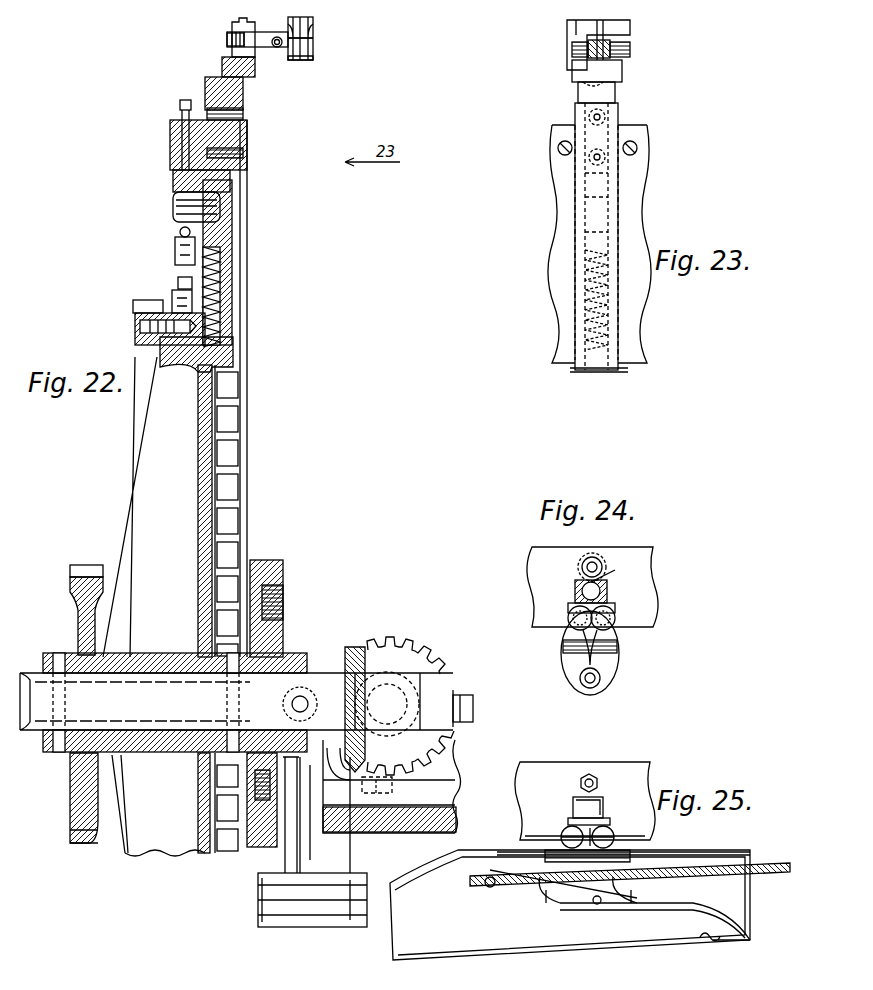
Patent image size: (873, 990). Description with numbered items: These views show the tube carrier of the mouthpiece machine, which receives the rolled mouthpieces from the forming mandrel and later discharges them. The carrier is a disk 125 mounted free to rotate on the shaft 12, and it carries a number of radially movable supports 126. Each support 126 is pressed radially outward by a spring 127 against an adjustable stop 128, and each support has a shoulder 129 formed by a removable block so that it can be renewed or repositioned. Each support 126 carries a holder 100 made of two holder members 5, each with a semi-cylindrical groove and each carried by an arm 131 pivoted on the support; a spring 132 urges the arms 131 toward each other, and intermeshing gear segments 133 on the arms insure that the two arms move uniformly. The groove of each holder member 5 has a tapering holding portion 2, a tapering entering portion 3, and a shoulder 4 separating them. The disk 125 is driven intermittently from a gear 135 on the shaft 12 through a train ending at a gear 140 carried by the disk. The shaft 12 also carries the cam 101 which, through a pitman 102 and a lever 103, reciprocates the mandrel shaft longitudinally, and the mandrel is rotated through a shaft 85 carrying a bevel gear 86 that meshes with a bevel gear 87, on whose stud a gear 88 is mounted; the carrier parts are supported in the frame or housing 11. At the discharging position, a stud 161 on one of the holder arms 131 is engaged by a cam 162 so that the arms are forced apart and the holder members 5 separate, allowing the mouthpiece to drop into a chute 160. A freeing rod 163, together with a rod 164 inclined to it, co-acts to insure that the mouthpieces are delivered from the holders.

In FIG. 22, the tapering holding portion 2 is at (313, 30).
In FIG. 22, the tapering entering portion 3 is at (313, 52).
In FIG. 22, the shoulder 4 is at (313, 38).
In FIG. 22, the holder member 5 is at (296, 60).
In FIG. 23, the holder member 5 is at (590, 65).
In FIG. 24, the holder member 5 is at (582, 686).
In FIG. 25, the holder member 5 is at (546, 900).
In FIG. 22, the housing 11 is at (395, 833).
In FIG. 22, the shaft 12 is at (236, 701).
In FIG. 22, the shaft 85 is at (473, 710).
In FIG. 22, the bevel gear 86 is at (353, 647).
In FIG. 22, the bevel gear 87 is at (395, 690).
In FIG. 22, the gear 88 is at (392, 637).
In FIG. 22, the holder 100 is at (313, 22).
In FIG. 22, the cam 101 is at (283, 578).
In FIG. 22, the pitman 102 is at (305, 790).
In FIG. 22, the lever 103 is at (285, 855).
In FIG. 22, the disk 125 is at (198, 483).
In FIG. 23, the disk 125 is at (640, 200).
In FIG. 24, the disk 125 is at (532, 572).
In FIG. 25, the disk 125 is at (565, 765).
In FIG. 22, the radially movable support 126 is at (243, 95).
In FIG. 23, the radially movable support 126 is at (618, 105).
In FIG. 22, the spring 127 is at (225, 290).
In FIG. 23, the spring 127 is at (595, 287).
In FIG. 24, the spring 127 is at (575, 592).
In FIG. 22, the adjustable stop 128 is at (165, 165).
In FIG. 24, the adjustable stop 128 is at (595, 557).
In FIG. 25, the adjustable stop 128 is at (593, 774).
In FIG. 22, the shoulder 129 is at (205, 83).
In FIG. 23, the shoulder 129 is at (600, 84).
In FIG. 24, the shoulder 129 is at (618, 570).
In FIG. 25, the shoulder 129 is at (603, 805).
In FIG. 22, the arm 131 is at (255, 40).
In FIG. 23, the arm 131 is at (572, 52).
In FIG. 24, the arm 131 is at (566, 672).
In FIG. 25, the arm 131 is at (540, 885).
In FIG. 22, the spring 132 is at (276, 47).
In FIG. 23, the spring 132 is at (610, 45).
In FIG. 24, the spring 132 is at (617, 645).
In FIG. 25, the spring 132 is at (630, 852).
In FIG. 22, the intermeshing gear segment 133 is at (227, 39).
In FIG. 24, the intermeshing gear segment 133 is at (600, 605).
In FIG. 25, the intermeshing gear segment 133 is at (600, 822).
In FIG. 22, the gear 135 is at (85, 568).
In FIG. 22, the gear 140 is at (133, 306).
In FIG. 25, the chute 160 is at (570, 905).
In FIG. 23, the stud 161 is at (567, 28).
In FIG. 24, the stud 161 is at (568, 632).
In FIG. 25, the stud 161 is at (563, 830).
In FIG. 25, the cam 162 is at (513, 860).
In FIG. 25, the freeing rod 163 is at (560, 885).
In FIG. 25, the rod 164 is at (615, 910).